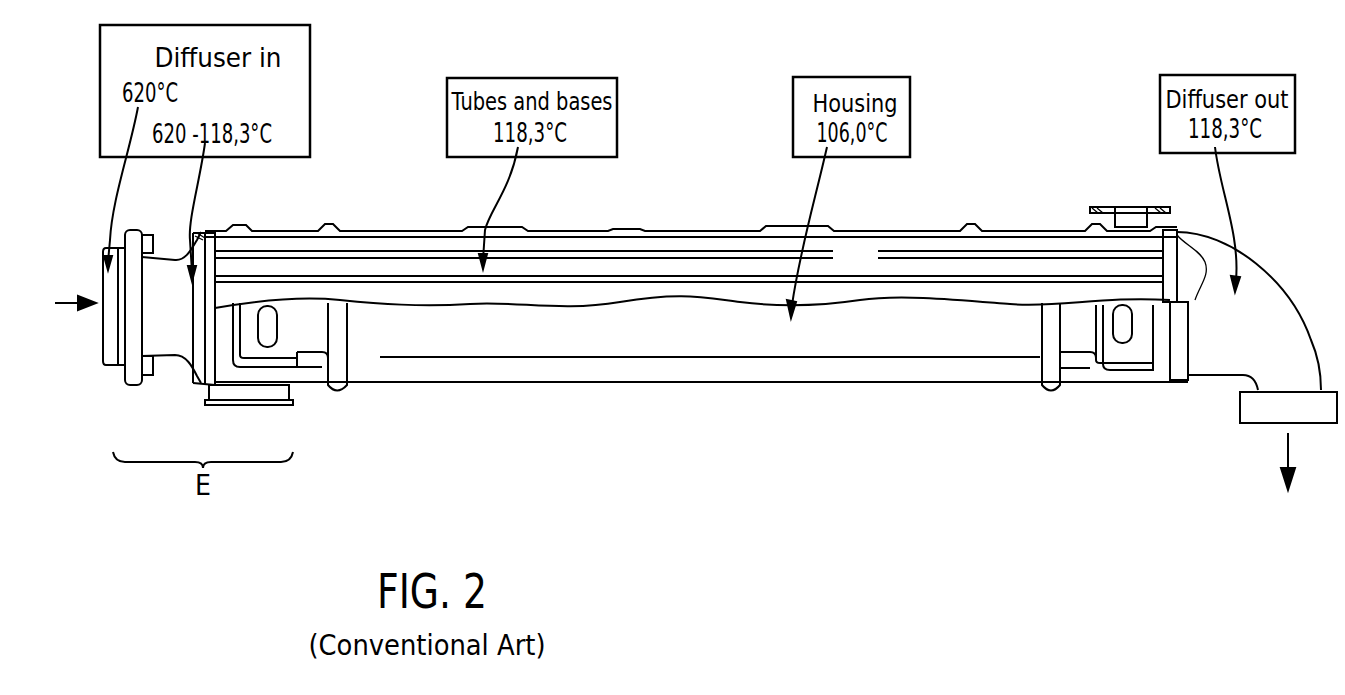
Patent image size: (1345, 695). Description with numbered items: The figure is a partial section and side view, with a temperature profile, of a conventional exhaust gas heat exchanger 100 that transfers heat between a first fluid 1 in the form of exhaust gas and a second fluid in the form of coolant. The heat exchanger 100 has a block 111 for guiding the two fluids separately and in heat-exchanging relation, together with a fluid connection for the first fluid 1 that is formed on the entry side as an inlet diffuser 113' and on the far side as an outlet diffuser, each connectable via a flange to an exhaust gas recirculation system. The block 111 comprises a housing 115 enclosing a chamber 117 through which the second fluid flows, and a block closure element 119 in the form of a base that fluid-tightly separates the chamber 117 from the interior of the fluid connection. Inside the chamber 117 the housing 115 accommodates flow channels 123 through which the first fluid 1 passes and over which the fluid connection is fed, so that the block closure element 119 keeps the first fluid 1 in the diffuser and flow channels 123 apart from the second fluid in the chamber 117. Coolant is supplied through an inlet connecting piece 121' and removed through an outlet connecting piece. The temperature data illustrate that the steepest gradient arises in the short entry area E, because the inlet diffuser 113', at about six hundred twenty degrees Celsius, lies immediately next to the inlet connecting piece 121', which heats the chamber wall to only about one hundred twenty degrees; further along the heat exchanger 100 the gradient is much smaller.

The heat exchanger 100 is at (696, 337).
The block 111 is at (690, 300).
The inlet diffuser 113' is at (152, 337).
The housing 115 is at (871, 369).
The chamber 117 is at (875, 268).
The block closure element 119 is at (217, 236).
The inlet connecting piece 121' is at (284, 413).
The flow channels 123 is at (742, 243).
The first fluid 1 is at (67, 298).